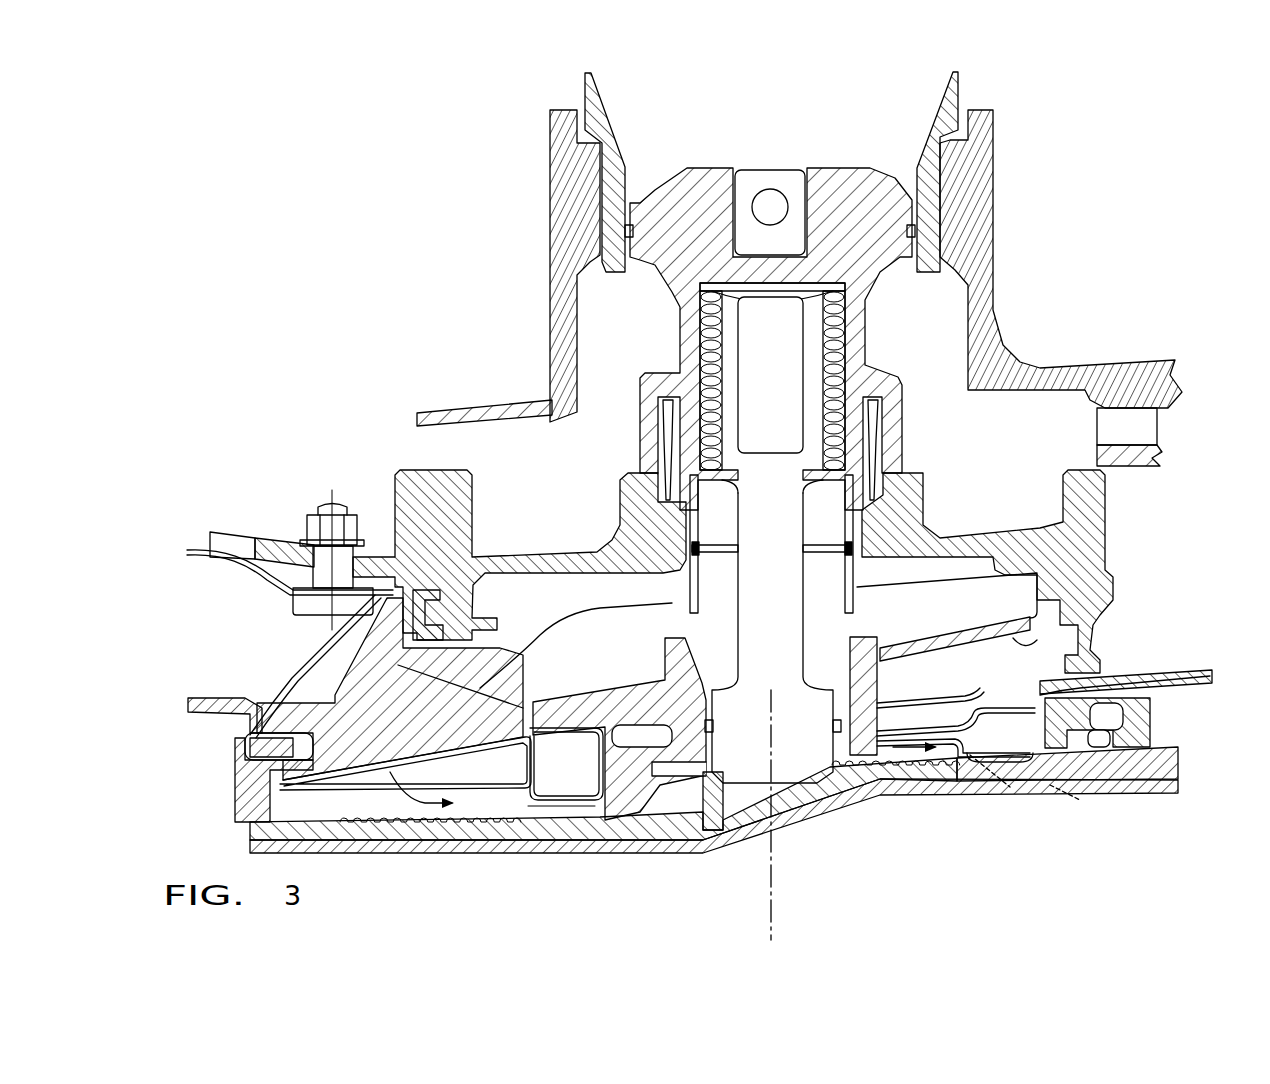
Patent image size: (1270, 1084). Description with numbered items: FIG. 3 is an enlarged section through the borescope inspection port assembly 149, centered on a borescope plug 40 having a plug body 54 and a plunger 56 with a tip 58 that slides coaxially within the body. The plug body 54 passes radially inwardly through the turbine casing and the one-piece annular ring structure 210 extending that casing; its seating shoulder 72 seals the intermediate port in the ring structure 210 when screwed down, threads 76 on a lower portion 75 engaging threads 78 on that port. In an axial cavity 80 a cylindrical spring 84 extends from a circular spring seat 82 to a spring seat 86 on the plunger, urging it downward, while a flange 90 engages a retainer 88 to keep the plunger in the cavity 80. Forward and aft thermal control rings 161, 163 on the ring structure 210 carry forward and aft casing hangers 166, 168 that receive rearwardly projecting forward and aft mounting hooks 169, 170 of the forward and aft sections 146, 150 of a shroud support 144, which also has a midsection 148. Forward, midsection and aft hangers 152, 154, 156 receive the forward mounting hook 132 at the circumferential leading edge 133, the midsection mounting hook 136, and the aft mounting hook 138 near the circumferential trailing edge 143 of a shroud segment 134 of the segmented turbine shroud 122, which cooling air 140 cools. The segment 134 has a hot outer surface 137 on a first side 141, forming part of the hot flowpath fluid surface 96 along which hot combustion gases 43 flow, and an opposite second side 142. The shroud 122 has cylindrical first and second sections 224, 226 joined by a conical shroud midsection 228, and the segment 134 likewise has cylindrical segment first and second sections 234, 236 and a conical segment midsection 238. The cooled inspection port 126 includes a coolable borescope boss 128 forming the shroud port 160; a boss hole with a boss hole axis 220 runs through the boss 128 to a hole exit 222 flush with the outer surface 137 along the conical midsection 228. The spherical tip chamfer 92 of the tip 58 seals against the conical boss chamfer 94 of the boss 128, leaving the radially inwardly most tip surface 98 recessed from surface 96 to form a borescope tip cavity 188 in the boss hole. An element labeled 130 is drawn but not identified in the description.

The borescope plug 40 is at (705, 168).
The hot combustion gases 43 is at (603, 880).
The plug body 54 is at (867, 322).
The plunger 56 is at (690, 590).
The tip 58 is at (695, 672).
The seating shoulder 72 is at (640, 460).
The lower portion 75 is at (700, 520).
The threads 76 is at (652, 535).
The threads 78 is at (700, 571).
The axial cavity 80 is at (872, 495).
The circular spring seat 82 is at (772, 288).
The cylindrical spring 84 is at (715, 350).
The spring seat 86 is at (872, 440).
The retainer 88 is at (825, 565).
The flange 90 is at (817, 497).
The spherical tip chamfer 92 is at (712, 772).
The conical boss chamfer 94 is at (827, 772).
The hot flowpath fluid surface 96 is at (367, 853).
The radially inwardly most tip surface 98 is at (767, 790).
The annular segmented turbine shroud 122 is at (1150, 750).
The cooled inspection port 126 is at (700, 788).
The coolable borescope boss 128 is at (712, 823).
The plate 130 is at (862, 800).
The forward mounting hook 132 is at (238, 700).
The circumferential leading edge 133 is at (250, 782).
The arcuate shroud segment 134 is at (1180, 788).
The midsection mounting hook 136 is at (643, 730).
The hot outer surface 137 is at (1107, 798).
The aft mounting hook 138 is at (1117, 680).
The cooling air 140 is at (392, 771).
The first side 141 is at (980, 800).
The second side 142 is at (948, 757).
The circumferential trailing edge 143 is at (1180, 765).
The shroud support 144 is at (505, 653).
The forward section 146 is at (300, 688).
The midsection 148 is at (967, 640).
The borescope inspection port assembly 149 is at (706, 113).
The aft section 150 is at (995, 218).
The forward hanger 152 is at (245, 750).
The midsection hanger 154 is at (925, 500).
The aft hanger 156 is at (1152, 718).
The shroud port 160 is at (807, 790).
The forward thermal control ring 161 is at (432, 470).
The aft thermal control ring 163 is at (1108, 495).
The forward casing hanger 166 is at (423, 645).
The aft casing hanger 168 is at (1090, 610).
The forward mounting hook 169 is at (380, 625).
The aft mounting hook 170 is at (1037, 587).
The borescope tip cavity 188 is at (832, 835).
The annular ring structure 210 is at (1088, 370).
The boss hole axis 220 is at (790, 894).
The hole exit 222 is at (730, 830).
The cylindrical shroud first section 224 is at (477, 853).
The cylindrical shroud second section 226 is at (1013, 793).
The conical shroud midsection 228 is at (720, 810).
The cylindrical segment first section 234 is at (330, 853).
The cylindrical segment second section 236 is at (1060, 797).
The conical segment midsection 238 is at (715, 797).